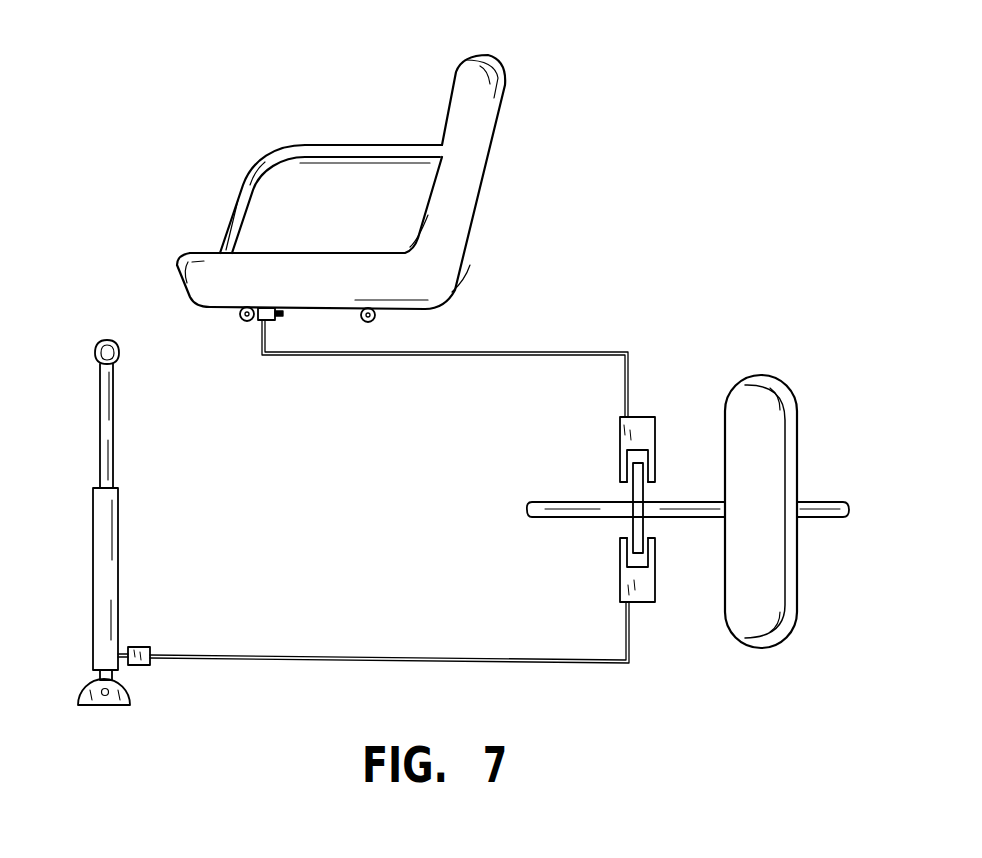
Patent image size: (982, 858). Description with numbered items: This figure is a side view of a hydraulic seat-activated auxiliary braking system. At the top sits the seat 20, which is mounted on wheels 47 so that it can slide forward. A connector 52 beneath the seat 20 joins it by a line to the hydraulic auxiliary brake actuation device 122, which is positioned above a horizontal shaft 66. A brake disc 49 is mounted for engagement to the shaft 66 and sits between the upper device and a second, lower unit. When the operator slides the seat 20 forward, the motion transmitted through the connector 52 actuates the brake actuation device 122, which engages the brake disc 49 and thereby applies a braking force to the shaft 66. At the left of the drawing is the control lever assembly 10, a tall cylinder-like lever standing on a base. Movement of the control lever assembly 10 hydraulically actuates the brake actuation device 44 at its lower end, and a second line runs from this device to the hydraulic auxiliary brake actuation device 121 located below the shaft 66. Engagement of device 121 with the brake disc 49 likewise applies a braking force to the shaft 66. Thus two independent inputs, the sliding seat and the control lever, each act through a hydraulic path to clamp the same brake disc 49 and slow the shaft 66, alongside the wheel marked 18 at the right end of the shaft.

The seat 20 is at (478, 137).
The connector 52 is at (278, 315).
The wheels 47 is at (377, 322).
The control lever assembly 10 is at (118, 500).
The brake actuation device 44 is at (150, 665).
The hydraulic auxiliary brake actuation device 122 is at (645, 422).
The hydraulic auxiliary brake actuation device 121 is at (645, 593).
The brake disc 49 is at (643, 495).
The wheel 18 is at (768, 572).
The shaft 66 is at (817, 505).